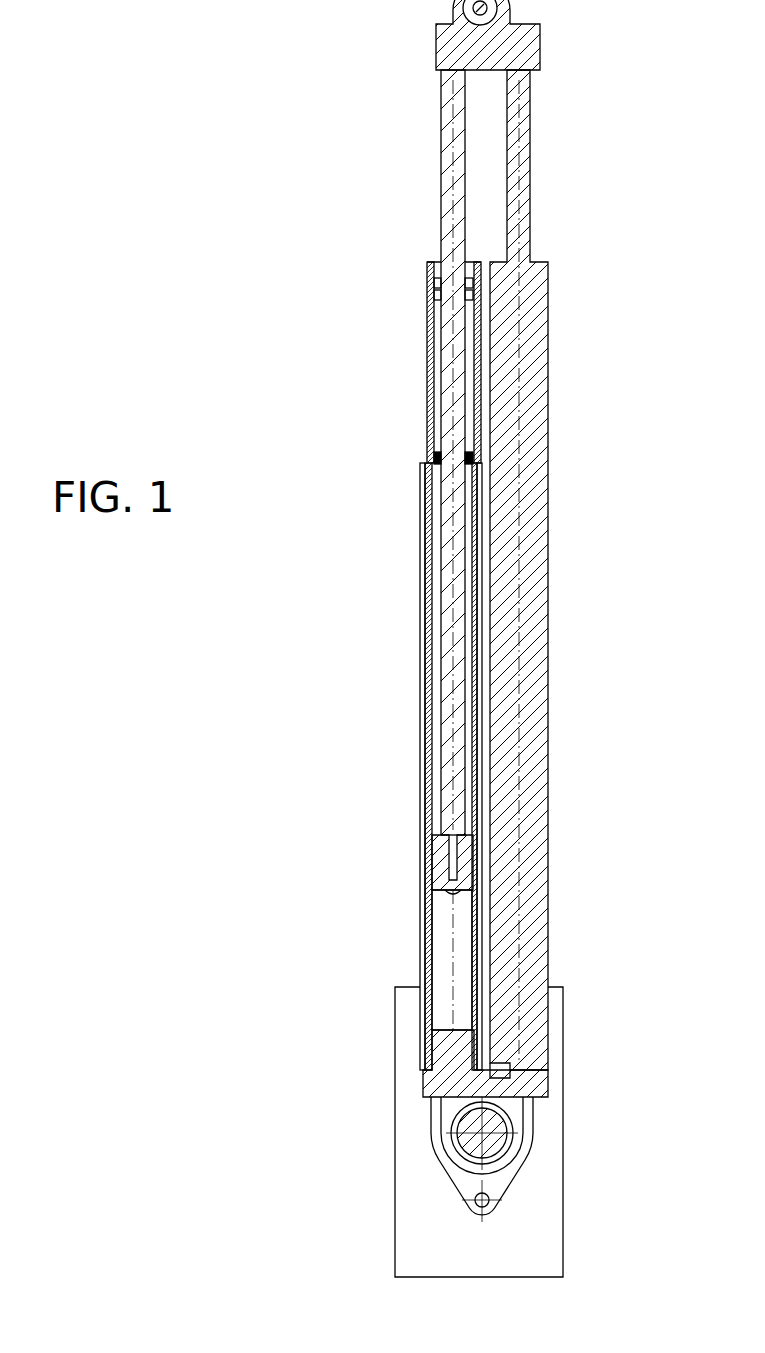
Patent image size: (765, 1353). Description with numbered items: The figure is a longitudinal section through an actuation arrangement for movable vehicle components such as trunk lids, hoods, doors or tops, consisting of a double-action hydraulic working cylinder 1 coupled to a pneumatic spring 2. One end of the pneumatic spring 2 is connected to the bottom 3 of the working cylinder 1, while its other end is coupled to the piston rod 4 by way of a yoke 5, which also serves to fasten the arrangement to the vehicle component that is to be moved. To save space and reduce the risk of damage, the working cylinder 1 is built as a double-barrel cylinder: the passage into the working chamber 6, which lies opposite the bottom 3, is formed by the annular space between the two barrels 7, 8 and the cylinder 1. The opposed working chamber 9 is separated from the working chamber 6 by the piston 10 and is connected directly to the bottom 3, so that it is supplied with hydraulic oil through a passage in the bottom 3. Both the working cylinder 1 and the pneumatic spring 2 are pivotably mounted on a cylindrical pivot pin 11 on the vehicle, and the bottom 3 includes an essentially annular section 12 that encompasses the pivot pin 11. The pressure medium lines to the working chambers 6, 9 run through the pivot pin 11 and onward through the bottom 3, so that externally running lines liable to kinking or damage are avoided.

The double-action hydraulic working cylinder 1 is at (403, 726).
The pneumatic spring 2 is at (528, 562).
The bottom 3 is at (448, 1078).
The piston rod 4 is at (445, 150).
The yoke 5 is at (463, 43).
The working chamber 6 is at (437, 625).
The barrel 7 is at (422, 515).
The barrel 8 is at (427, 343).
The working chamber 9 is at (445, 978).
The piston 10 is at (437, 862).
The pivot pin 11 is at (462, 1143).
The section 12 is at (513, 1130).